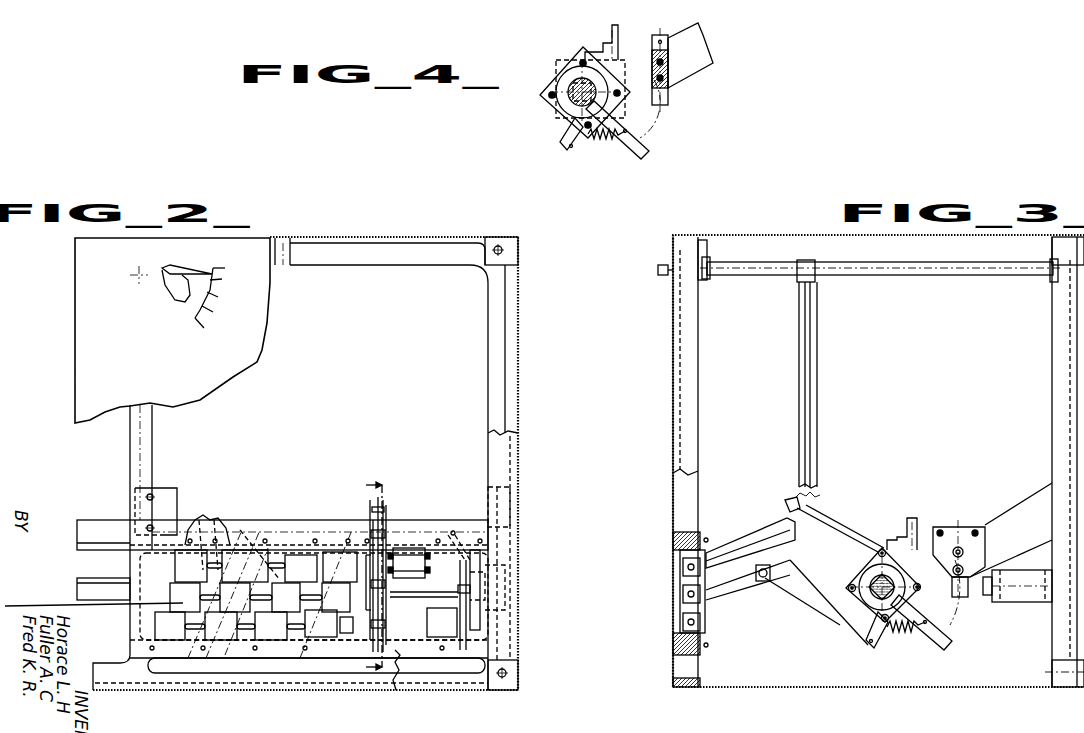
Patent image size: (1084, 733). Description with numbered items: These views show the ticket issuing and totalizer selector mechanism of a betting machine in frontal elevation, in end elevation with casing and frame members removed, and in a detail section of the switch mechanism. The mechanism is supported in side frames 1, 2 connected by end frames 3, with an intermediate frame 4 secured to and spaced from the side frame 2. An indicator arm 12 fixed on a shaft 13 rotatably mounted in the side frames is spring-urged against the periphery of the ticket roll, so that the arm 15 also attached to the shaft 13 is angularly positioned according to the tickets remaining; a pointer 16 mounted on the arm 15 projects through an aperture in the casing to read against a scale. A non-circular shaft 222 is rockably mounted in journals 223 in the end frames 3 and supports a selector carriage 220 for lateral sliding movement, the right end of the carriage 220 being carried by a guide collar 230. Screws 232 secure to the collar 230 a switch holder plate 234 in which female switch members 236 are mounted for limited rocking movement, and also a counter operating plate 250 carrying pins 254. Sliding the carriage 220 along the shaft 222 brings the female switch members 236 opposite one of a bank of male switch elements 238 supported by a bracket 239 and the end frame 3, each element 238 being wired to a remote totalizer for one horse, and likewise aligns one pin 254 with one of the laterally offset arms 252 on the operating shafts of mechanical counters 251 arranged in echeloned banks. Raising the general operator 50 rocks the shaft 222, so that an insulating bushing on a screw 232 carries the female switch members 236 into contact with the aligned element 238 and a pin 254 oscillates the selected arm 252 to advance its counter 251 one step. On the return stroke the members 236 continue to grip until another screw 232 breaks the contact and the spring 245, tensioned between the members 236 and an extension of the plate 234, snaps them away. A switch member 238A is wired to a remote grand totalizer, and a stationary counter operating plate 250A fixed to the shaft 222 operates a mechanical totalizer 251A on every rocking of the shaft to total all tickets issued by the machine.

In FIG. 2, the side frame 1 is at (492, 453).
In FIG. 3, the side frame 1 is at (685, 453).
In FIG. 2, the side frame 2 is at (492, 388).
In FIG. 3, the side frame 2 is at (1060, 383).
In FIG. 2, the end frame 3 is at (510, 541).
In FIG. 2, the intermediate frame 4 is at (380, 577).
In FIG. 3, the indicator arm 12 is at (806, 383).
In FIG. 3, the shaft 13 is at (866, 274).
In FIG. 2, the arm 15 is at (166, 287).
In FIG. 3, the arm 15 is at (705, 277).
In FIG. 2, the pointer 16 is at (180, 270).
In FIG. 3, the pointer 16 is at (661, 276).
In FIG. 2, the general operator 50 is at (78, 605).
In FIG. 3, the general operator 50 is at (1035, 602).
In FIG. 4, the selector carriage 220 is at (612, 26).
In FIG. 2, the selector carriage 220 is at (253, 520).
In FIG. 3, the selector carriage 220 is at (914, 518).
In FIG. 4, the non-circular shaft 222 is at (572, 96).
In FIG. 2, the non-circular shaft 222 is at (85, 575).
In FIG. 3, the non-circular shaft 222 is at (870, 598).
In FIG. 2, the journals 223 is at (512, 568).
In FIG. 4, the guide collar 230 is at (560, 68).
In FIG. 2, the guide collar 230 is at (365, 615).
In FIG. 4, the screws 232 is at (582, 61).
In FIG. 2, the screws 232 is at (385, 620).
In FIG. 3, the screws 232 is at (880, 548).
In FIG. 4, the switch holder plate 234 is at (612, 82).
In FIG. 2, the switch holder plate 234 is at (375, 628).
In FIG. 3, the switch holder plate 234 is at (863, 570).
In FIG. 4, the female switch members 236 is at (647, 152).
In FIG. 2, the female switch members 236 is at (396, 690).
In FIG. 3, the female switch members 236 is at (952, 640).
In FIG. 4, the male switch elements 238 is at (668, 100).
In FIG. 2, the male switch elements 238 is at (207, 515).
In FIG. 3, the male switch elements 238 is at (958, 597).
In FIG. 2, the switch member 238A is at (460, 527).
In FIG. 4, the bracket 239 is at (700, 68).
In FIG. 2, the bracket 239 is at (170, 495).
In FIG. 3, the bracket 239 is at (1027, 510).
In FIG. 4, the spring 245 is at (592, 142).
In FIG. 3, the spring 245 is at (903, 636).
In FIG. 2, the counter operating plate 250 is at (384, 512).
In FIG. 3, the counter operating plate 250 is at (832, 520).
In FIG. 2, the stationary counter operating plate 250A is at (435, 600).
In FIG. 3, the stationary counter operating plate 250A is at (798, 600).
In FIG. 2, the mechanical counters 251 is at (256, 594).
In FIG. 3, the mechanical counters 251 is at (680, 622).
In FIG. 2, the mechanical totalizer 251A is at (436, 630).
In FIG. 2, the arms 252 is at (386, 530).
In FIG. 3, the arms 252 is at (738, 543).
In FIG. 2, the pins 254 is at (373, 509).
In FIG. 3, the pins 254 is at (808, 500).